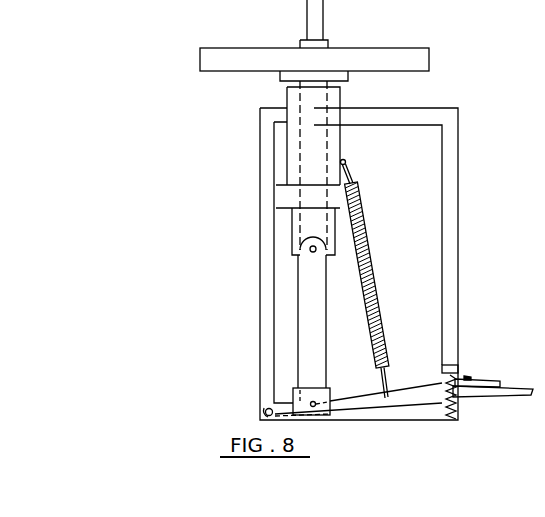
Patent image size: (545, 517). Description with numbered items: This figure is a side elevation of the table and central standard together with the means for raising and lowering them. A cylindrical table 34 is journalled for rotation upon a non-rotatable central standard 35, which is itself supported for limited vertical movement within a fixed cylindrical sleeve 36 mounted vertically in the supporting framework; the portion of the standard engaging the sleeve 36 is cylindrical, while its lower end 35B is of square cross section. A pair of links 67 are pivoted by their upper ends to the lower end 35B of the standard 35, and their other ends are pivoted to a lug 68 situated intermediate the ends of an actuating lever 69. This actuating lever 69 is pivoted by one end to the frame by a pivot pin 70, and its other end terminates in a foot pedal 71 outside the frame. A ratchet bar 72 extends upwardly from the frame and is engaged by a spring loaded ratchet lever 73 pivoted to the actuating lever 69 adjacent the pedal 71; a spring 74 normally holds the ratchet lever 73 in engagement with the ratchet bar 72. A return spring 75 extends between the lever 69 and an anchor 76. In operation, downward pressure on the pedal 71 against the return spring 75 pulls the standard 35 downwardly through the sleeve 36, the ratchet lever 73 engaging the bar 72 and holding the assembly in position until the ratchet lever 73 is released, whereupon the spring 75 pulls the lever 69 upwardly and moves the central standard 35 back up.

The cylindrical table 34 is at (420, 62).
The central standard 35 is at (328, 22).
The lower end of the standard 35B is at (305, 237).
The cylindrical sleeve 36 is at (328, 97).
The links 67 is at (313, 321).
The lug 68 is at (336, 379).
The actuating lever 69 is at (405, 397).
The pivot pin 70 is at (266, 409).
The foot pedal 71 is at (520, 393).
The ratchet bar 72 is at (460, 407).
The ratchet lever 73 is at (486, 382).
The spring 74 is at (455, 372).
The return spring 75 is at (388, 342).
The anchor 76 is at (346, 162).